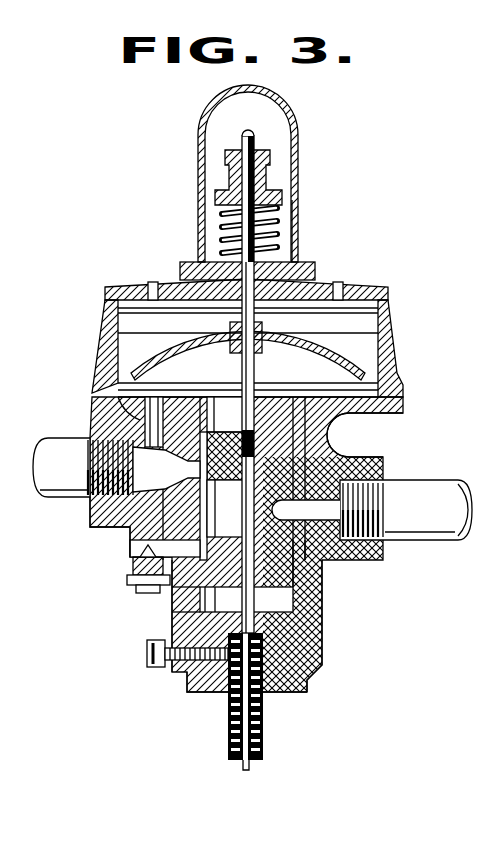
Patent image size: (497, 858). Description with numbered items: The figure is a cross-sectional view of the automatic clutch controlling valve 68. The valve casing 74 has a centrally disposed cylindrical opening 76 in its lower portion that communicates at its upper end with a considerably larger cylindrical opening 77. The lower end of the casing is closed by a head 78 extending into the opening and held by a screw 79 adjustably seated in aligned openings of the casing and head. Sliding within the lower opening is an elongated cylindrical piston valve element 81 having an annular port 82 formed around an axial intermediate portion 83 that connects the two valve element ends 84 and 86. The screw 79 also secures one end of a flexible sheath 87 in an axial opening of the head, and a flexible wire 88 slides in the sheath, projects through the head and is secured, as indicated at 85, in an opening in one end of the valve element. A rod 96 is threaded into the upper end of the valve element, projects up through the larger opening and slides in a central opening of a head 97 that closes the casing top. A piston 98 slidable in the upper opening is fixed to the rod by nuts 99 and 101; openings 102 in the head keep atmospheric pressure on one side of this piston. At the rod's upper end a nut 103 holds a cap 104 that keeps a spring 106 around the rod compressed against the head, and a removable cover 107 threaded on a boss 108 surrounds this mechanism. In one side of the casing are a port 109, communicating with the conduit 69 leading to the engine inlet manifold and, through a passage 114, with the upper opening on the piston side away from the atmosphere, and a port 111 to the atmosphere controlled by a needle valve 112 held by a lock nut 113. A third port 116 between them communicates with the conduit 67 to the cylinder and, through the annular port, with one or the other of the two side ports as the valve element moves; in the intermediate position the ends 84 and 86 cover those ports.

The conduit 67 is at (405, 545).
The valve 68 is at (246, 544).
The conduit 69 is at (58, 448).
The valve casing 74 is at (323, 630).
The cylindrical opening 76 is at (178, 620).
The cylindrical opening 77 is at (370, 313).
The head 78 is at (290, 692).
The screw 79 is at (170, 673).
The piston valve element 81 is at (296, 568).
The annular port 82 is at (330, 458).
The intermediate portion 83 is at (130, 535).
The valve element end 84 is at (330, 433).
The wire securement 85 is at (296, 598).
The valve element end 86 is at (178, 598).
The flexible sheath 87 is at (228, 715).
The flexible wire 88 is at (250, 768).
The rod 96 is at (298, 240).
The head 97 is at (163, 283).
The piston 98 is at (358, 344).
The nut 99 is at (230, 330).
The nut 101 is at (230, 346).
The openings 102 is at (152, 283).
The nut 103 is at (296, 127).
The cap 104 is at (272, 158).
The spring 106 is at (276, 218).
The removable cover 107 is at (198, 163).
The boss 108 is at (300, 268).
The port 109 is at (90, 510).
The port 111 is at (130, 557).
The needle valve 112 is at (133, 573).
The lock nut 113 is at (130, 583).
The passage 114 is at (137, 417).
The port 116 is at (342, 500).